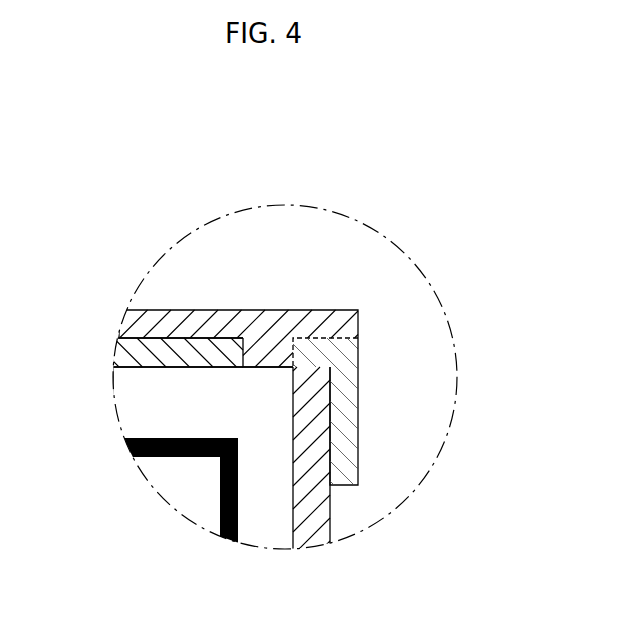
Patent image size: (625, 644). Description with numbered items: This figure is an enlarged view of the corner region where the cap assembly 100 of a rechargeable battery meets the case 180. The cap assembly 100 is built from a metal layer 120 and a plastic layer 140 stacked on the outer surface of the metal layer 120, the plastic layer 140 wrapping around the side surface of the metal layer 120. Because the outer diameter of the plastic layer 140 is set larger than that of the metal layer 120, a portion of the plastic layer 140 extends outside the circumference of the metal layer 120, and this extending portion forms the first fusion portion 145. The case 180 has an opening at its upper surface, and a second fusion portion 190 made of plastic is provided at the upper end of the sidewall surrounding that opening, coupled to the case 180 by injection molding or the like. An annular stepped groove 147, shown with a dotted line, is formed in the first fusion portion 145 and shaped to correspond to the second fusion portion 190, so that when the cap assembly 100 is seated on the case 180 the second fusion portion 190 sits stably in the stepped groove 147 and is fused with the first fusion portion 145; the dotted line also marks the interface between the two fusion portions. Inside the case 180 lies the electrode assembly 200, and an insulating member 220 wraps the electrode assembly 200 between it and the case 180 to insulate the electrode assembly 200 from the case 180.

The cap assembly 100 is at (241, 284).
The metal layer 120 is at (127, 352).
The plastic layer 140 is at (188, 308).
The first fusion portion 145 is at (335, 320).
The stepped groove 147 is at (293, 352).
The case 180 is at (320, 509).
The second fusion portion 190 is at (348, 432).
The electrode assembly 200 is at (187, 498).
The insulating member 220 is at (238, 503).